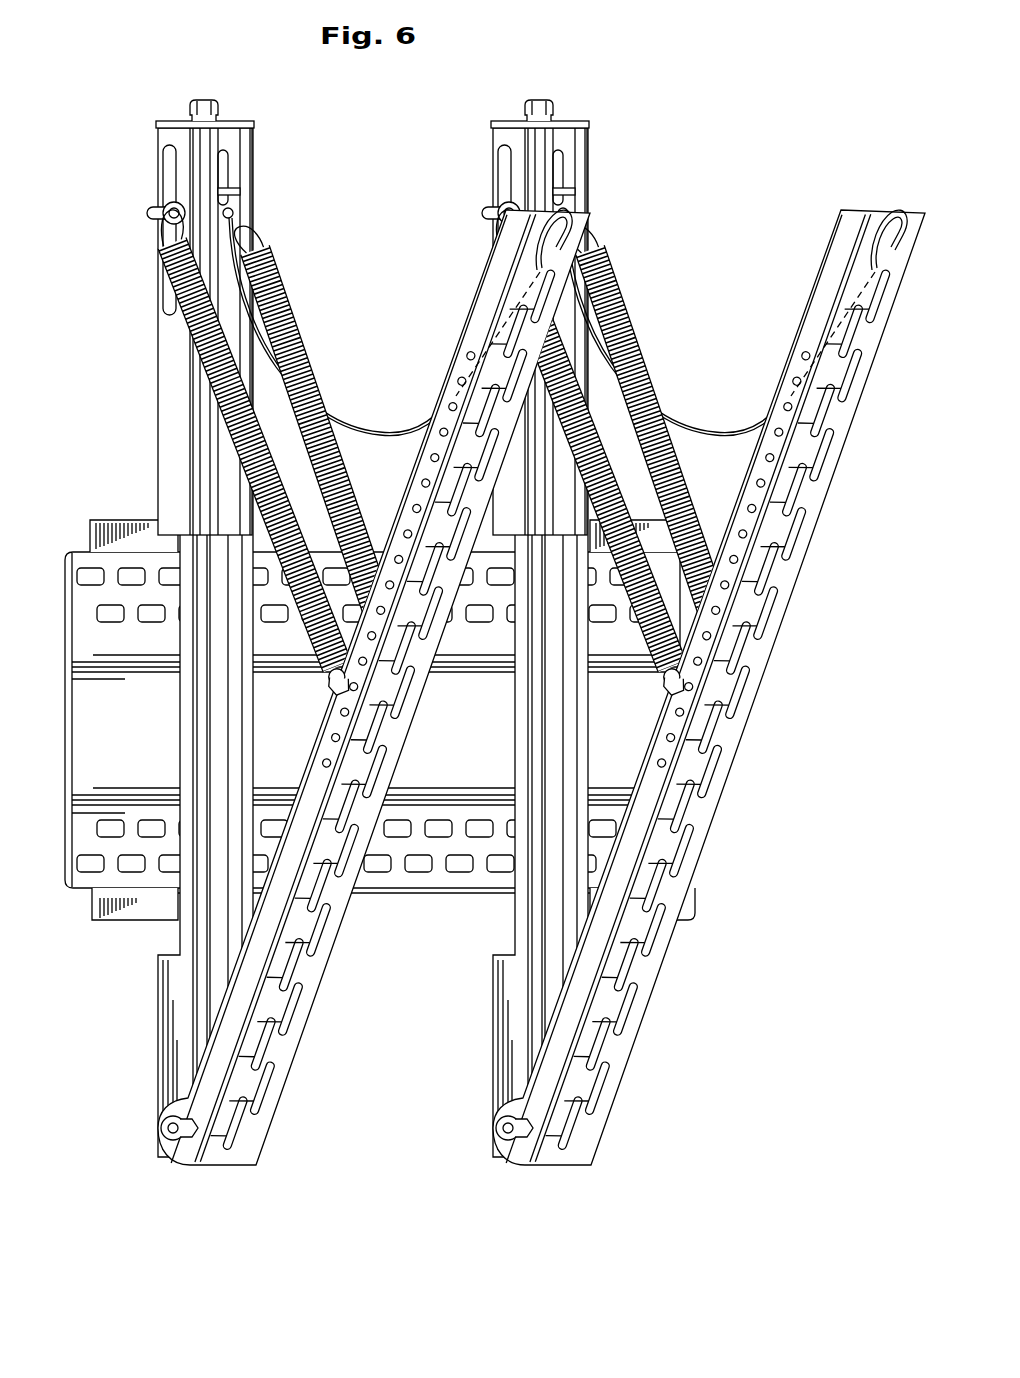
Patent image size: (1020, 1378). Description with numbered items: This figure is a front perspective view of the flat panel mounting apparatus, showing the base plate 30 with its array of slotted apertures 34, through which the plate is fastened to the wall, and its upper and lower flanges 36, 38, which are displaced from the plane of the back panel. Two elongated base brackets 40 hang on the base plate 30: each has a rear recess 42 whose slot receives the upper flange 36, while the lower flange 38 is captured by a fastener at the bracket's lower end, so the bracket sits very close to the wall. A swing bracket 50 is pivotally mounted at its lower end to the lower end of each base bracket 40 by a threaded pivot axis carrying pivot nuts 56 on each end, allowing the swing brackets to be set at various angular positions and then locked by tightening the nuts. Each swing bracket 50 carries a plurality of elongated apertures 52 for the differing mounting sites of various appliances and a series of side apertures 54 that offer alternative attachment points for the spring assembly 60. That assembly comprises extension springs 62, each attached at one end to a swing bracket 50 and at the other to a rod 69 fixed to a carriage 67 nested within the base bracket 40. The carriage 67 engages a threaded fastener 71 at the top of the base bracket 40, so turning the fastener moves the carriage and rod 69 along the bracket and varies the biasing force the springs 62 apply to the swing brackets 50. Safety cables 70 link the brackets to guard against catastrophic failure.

The base plate 30 is at (60, 637).
The slotted apertures 34 is at (110, 572).
The upper flange 36 is at (150, 532).
The lower flange 38 is at (125, 920).
The base bracket 40 is at (162, 400).
The rear recess 42 is at (160, 958).
The swing bracket 50 is at (541, 686).
The elongated apertures 52 is at (782, 638).
The side apertures 54 is at (803, 497).
The pivot nuts 56 is at (182, 1140).
The spring assembly 60 is at (627, 332).
The extension spring 62 is at (205, 343).
The carriage 67 is at (562, 190).
The rod 69 is at (148, 213).
The safety cable 70 is at (402, 428).
The threaded fastener 71 is at (556, 104).